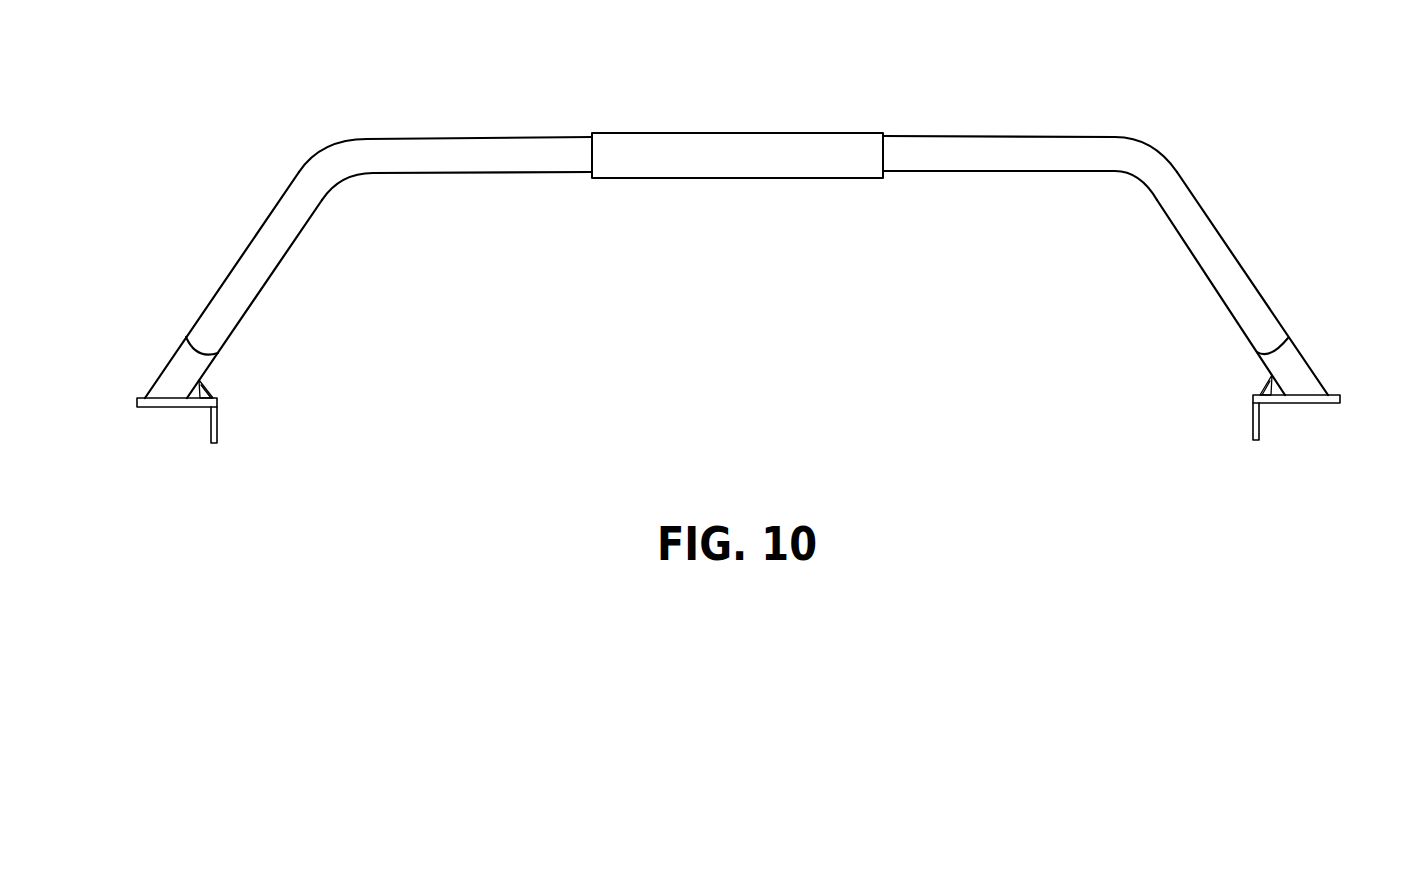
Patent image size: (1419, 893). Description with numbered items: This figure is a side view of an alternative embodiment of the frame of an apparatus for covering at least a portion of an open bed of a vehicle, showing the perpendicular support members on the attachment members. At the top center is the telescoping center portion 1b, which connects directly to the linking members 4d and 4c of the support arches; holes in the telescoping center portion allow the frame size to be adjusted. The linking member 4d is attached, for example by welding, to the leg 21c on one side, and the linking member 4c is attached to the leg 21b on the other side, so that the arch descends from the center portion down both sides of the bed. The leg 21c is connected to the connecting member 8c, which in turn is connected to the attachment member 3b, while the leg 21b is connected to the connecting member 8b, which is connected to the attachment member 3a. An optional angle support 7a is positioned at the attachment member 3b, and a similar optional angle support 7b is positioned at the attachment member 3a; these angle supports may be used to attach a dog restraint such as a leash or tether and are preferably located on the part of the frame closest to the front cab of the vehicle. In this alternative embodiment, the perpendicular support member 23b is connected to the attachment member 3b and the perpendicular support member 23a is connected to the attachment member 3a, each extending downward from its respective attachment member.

The telescoping center portion 1b is at (738, 133).
The linking member 4d is at (442, 138).
The linking member 4c is at (985, 136).
The leg 21c is at (234, 267).
The leg 21b is at (1238, 263).
The connecting member 8c is at (169, 363).
The connecting member 8b is at (1305, 363).
The angle support 7a is at (205, 382).
The angle support 7b is at (1265, 380).
The attachment member 3b is at (137, 398).
The attachment member 3a is at (1340, 396).
The perpendicular support member 23b is at (218, 442).
The perpendicular support member 23a is at (1254, 440).